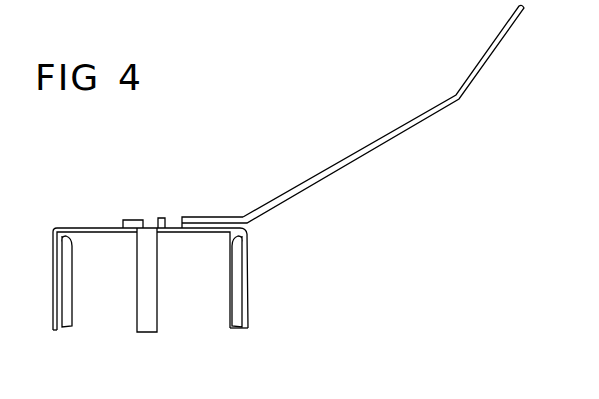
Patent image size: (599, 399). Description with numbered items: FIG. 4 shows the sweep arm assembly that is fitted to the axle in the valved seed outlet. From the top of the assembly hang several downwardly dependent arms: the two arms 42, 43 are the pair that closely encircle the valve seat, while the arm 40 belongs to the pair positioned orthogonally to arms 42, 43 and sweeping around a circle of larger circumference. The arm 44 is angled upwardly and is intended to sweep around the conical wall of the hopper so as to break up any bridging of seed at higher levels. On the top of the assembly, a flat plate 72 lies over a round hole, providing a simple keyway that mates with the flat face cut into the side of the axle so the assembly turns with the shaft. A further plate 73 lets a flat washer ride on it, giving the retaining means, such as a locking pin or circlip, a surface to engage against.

The arm 40 is at (158, 282).
The arm 42 is at (73, 288).
The arm 43 is at (248, 280).
The arm 44 is at (368, 142).
The flat plate 72 is at (132, 220).
The further plate 73 is at (163, 218).